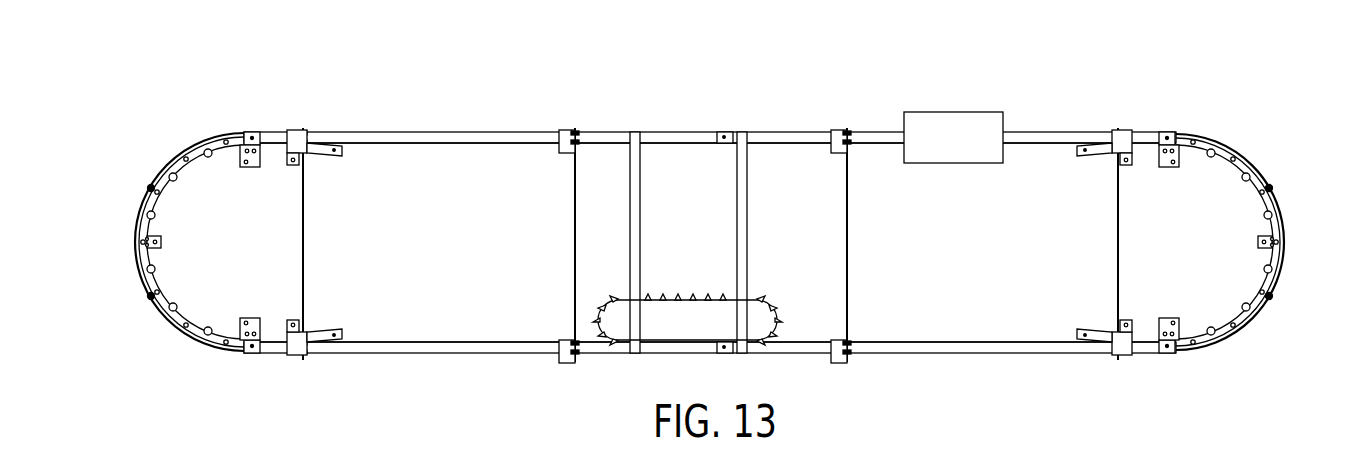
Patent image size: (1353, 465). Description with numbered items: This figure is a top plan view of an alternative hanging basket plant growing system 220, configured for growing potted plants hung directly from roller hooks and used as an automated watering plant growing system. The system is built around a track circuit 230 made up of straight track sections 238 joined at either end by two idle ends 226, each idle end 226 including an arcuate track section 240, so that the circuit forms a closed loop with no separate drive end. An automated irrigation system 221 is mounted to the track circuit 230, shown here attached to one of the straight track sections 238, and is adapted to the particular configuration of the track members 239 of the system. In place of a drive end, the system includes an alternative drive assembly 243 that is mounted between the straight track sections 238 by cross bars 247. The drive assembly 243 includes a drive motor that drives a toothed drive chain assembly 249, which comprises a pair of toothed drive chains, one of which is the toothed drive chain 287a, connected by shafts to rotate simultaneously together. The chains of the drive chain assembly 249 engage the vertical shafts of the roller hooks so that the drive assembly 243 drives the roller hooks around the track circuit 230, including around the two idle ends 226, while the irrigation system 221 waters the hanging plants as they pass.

The plant growing system 220 is at (312, 98).
The automated irrigation system 221 is at (903, 122).
The idle end 226 is at (143, 185).
The track circuit 230 is at (486, 132).
The straight track section 238 is at (668, 132).
The track member 239 is at (398, 144).
The arcuate track section 240 is at (177, 313).
The drive assembly 243 is at (782, 293).
The cross bar 247 is at (740, 197).
The toothed drive chain assembly 249 is at (590, 296).
The toothed drive chain 287a is at (778, 316).